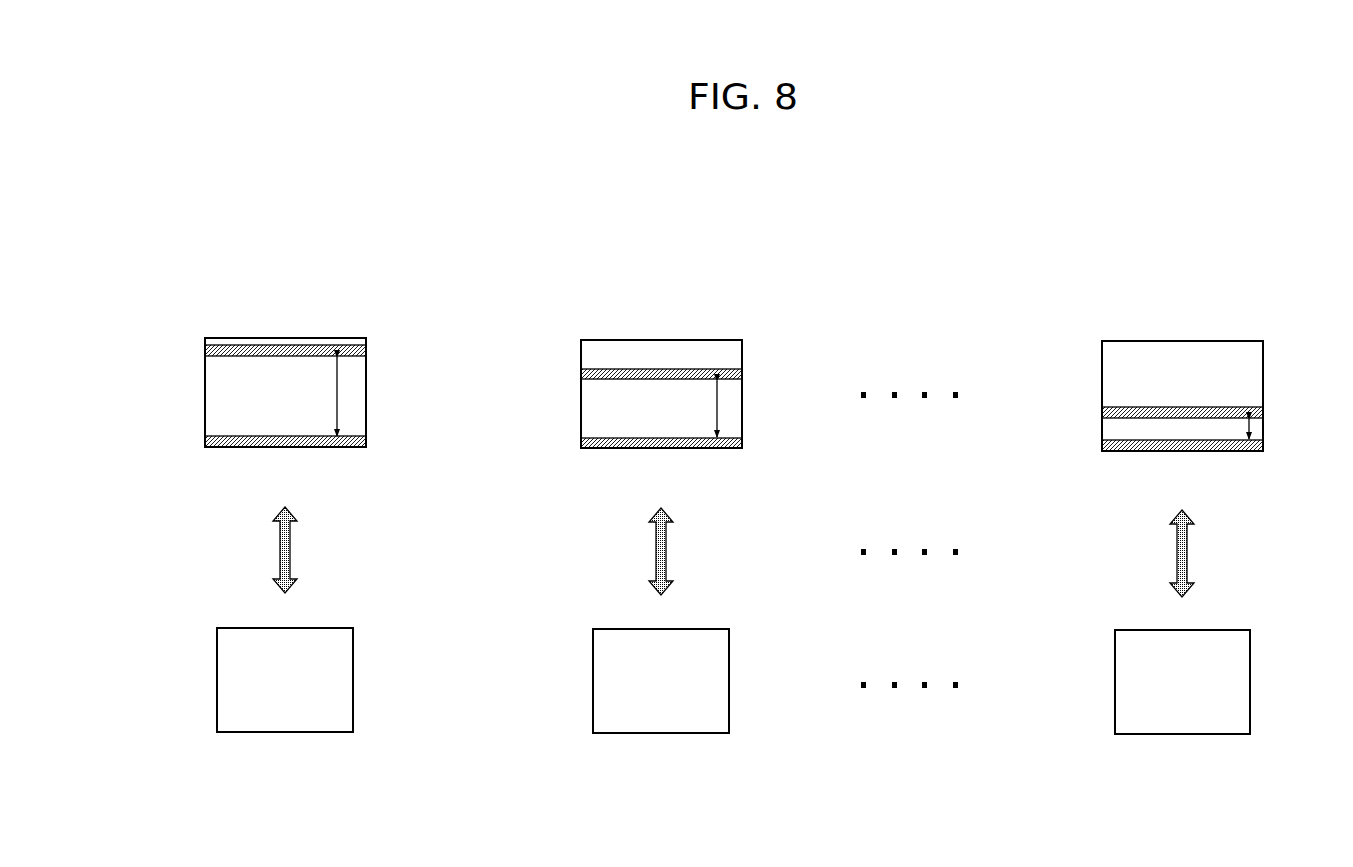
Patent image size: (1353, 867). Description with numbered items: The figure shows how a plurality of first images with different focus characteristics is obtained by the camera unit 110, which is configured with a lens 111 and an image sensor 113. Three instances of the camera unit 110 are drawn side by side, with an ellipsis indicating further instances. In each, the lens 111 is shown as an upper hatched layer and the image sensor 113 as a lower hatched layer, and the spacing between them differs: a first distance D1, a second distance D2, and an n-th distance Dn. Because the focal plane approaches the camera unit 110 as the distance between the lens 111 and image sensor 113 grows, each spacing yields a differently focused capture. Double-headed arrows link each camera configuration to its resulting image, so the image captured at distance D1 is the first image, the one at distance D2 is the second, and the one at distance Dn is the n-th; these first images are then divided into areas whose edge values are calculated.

The camera unit 110 is at (287, 338).
The lens 111 is at (205, 348).
The image sensor 113 is at (205, 440).
The distance D1 is at (337, 393).
The distance D2 is at (717, 407).
The distance Dn is at (1249, 428).